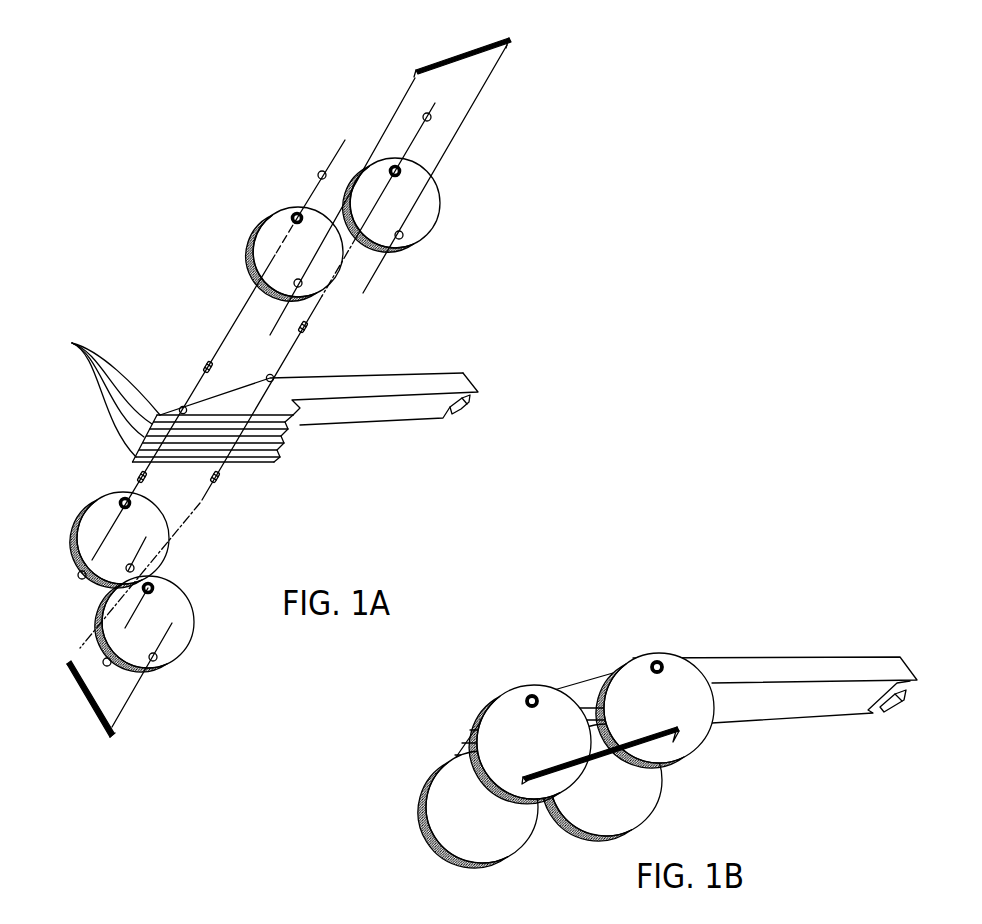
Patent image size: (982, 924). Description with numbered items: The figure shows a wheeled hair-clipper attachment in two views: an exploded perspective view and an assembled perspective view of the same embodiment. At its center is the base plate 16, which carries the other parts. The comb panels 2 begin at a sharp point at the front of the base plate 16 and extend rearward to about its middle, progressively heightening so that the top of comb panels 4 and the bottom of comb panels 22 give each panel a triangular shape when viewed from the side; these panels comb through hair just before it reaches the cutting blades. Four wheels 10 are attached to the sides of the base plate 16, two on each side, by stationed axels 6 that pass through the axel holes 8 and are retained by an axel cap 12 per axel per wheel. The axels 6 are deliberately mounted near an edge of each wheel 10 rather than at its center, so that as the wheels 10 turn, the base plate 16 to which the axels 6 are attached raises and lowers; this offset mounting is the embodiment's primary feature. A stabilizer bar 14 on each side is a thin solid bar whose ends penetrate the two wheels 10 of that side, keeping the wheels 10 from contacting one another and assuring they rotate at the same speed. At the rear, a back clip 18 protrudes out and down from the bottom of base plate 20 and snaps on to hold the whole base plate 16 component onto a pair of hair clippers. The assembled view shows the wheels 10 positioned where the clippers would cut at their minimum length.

The comb panels 2 is at (108, 396).
The top of comb panels 4 is at (180, 409).
The axels 6 is at (296, 326).
The axel holes 8 is at (185, 408).
The wheels 10 is at (394, 206).
The axel caps 12 is at (426, 116).
The stabilizer bar 14 is at (478, 52).
The base plate 16 is at (362, 372).
The back clip 18 is at (468, 410).
The bottom of base plate 20 is at (398, 414).
The bottom of comb panels 22 is at (228, 438).